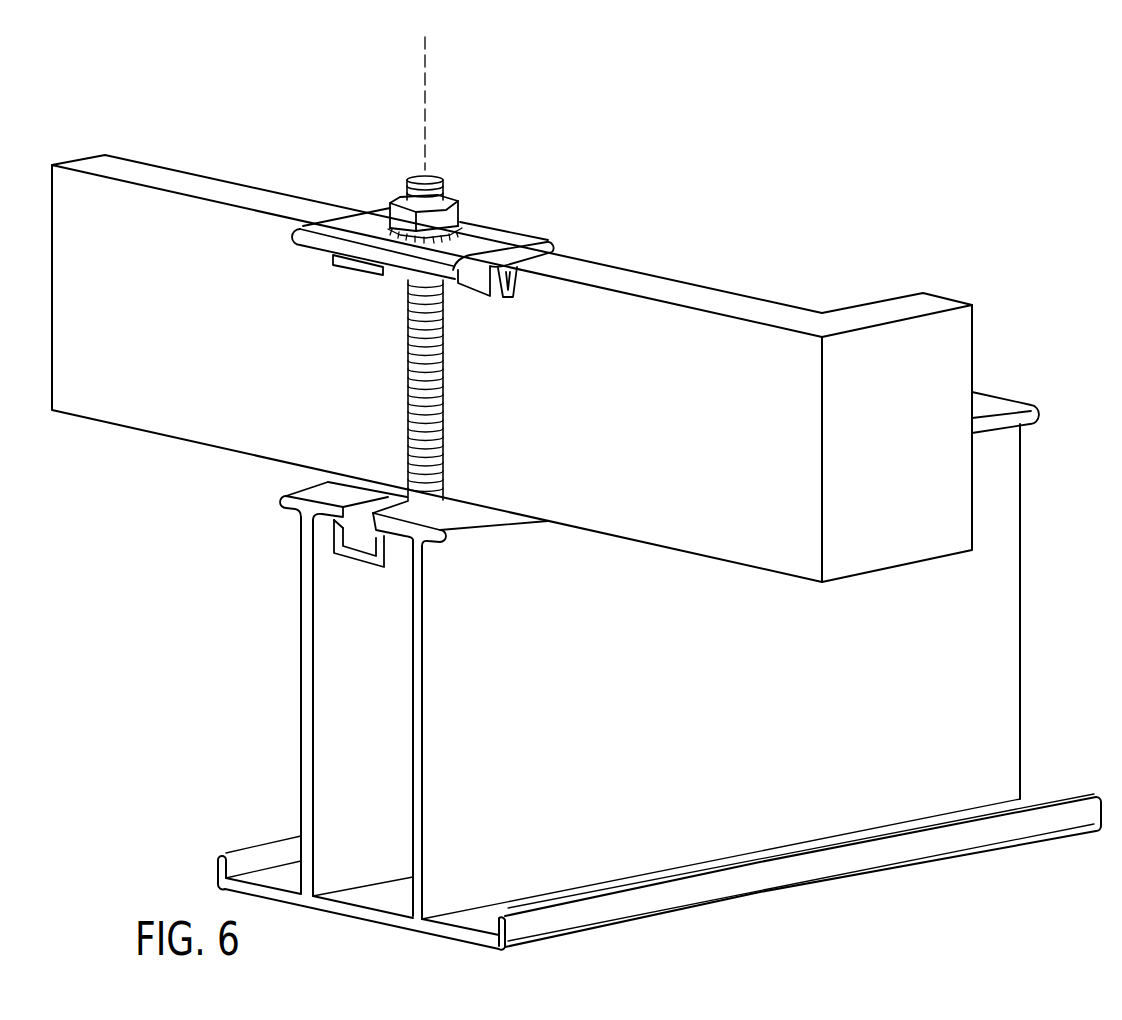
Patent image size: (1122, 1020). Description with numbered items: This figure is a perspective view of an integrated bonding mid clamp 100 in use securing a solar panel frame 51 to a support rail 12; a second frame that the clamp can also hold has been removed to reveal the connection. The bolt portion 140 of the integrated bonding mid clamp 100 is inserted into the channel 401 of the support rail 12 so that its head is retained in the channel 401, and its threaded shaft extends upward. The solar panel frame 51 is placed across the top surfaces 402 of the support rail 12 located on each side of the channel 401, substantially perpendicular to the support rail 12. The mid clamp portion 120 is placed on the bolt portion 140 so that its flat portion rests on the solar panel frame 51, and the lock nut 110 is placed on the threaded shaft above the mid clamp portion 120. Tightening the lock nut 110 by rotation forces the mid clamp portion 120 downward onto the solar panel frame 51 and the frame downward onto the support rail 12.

The support rail 12 is at (770, 812).
The solar panel frame 51 is at (885, 340).
The integrated bonding mid clamp 100 is at (464, 176).
The lock nut 110 is at (398, 212).
The mid clamp portion 120 is at (499, 250).
The bolt portion 140 is at (408, 372).
The channel 401 is at (348, 533).
The top surfaces 402 is at (315, 492).